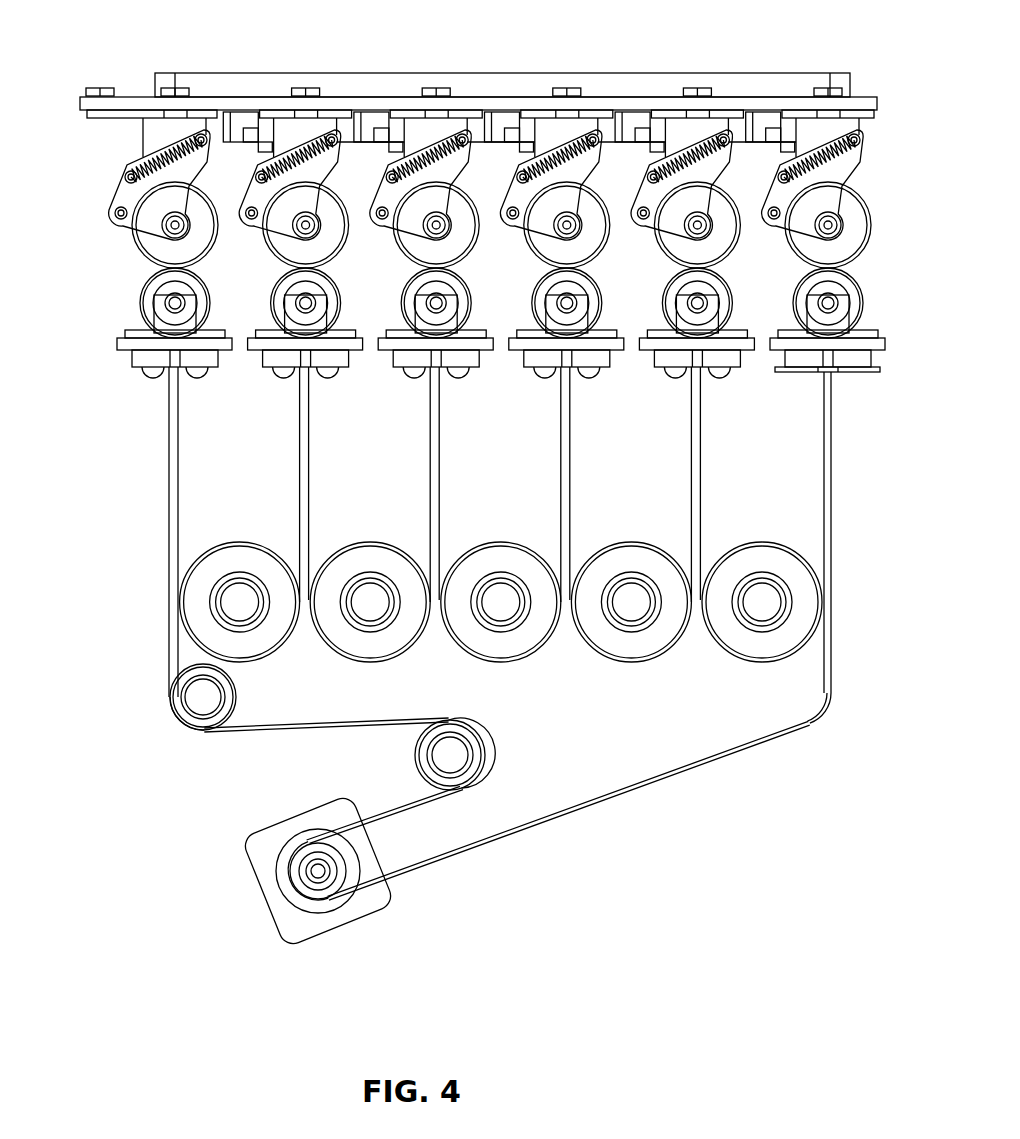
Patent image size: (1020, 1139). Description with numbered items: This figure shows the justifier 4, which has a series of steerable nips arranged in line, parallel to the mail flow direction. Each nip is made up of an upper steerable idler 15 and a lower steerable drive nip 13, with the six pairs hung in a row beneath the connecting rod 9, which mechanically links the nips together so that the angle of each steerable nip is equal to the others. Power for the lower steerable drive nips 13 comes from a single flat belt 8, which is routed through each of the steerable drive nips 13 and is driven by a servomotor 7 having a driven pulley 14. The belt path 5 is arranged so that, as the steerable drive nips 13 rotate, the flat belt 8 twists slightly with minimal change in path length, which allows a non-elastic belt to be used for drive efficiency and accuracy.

The justifier 4 is at (482, 295).
The belt path 5 is at (461, 670).
The servomotor 7 is at (243, 883).
The flat belt 8 is at (533, 825).
The connecting rod 9 is at (385, 75).
The lower steerable drive nip 13 is at (263, 305).
The driven pulley 14 is at (300, 880).
The upper steerable idler 15 is at (432, 257).